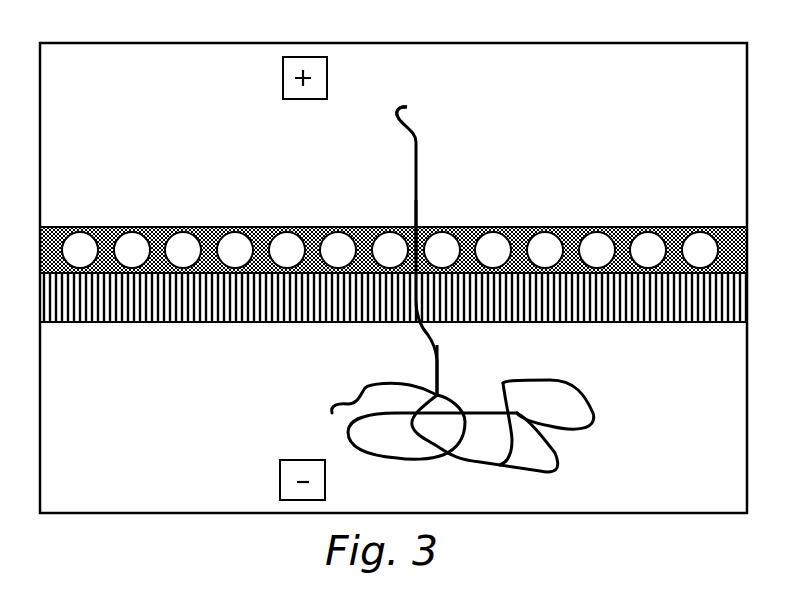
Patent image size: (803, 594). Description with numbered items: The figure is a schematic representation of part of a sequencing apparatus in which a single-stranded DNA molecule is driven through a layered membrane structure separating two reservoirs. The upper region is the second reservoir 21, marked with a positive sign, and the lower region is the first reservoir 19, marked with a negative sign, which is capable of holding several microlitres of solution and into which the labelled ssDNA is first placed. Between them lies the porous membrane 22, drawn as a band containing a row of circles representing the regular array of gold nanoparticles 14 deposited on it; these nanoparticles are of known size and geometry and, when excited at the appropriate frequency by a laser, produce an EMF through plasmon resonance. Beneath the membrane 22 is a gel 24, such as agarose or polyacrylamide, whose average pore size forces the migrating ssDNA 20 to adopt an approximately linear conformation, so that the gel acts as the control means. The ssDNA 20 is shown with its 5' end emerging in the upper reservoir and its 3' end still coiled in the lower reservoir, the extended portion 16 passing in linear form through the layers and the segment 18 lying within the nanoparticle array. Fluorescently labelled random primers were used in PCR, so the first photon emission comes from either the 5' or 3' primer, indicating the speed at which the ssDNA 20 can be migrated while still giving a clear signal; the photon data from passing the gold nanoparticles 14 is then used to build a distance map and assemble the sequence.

The second reservoir 21 is at (136, 107).
The gold nanoparticles 14 is at (272, 230).
The porous membrane 22 is at (315, 268).
The gel 24 is at (194, 295).
The nucleic acid strand 16 is at (424, 139).
The 5' primer 5' is at (417, 108).
The strand portion within pore 18 is at (425, 236).
The ssDNA 20 is at (447, 348).
The 3' primer 3' is at (455, 426).
The first reservoir 19 is at (140, 447).